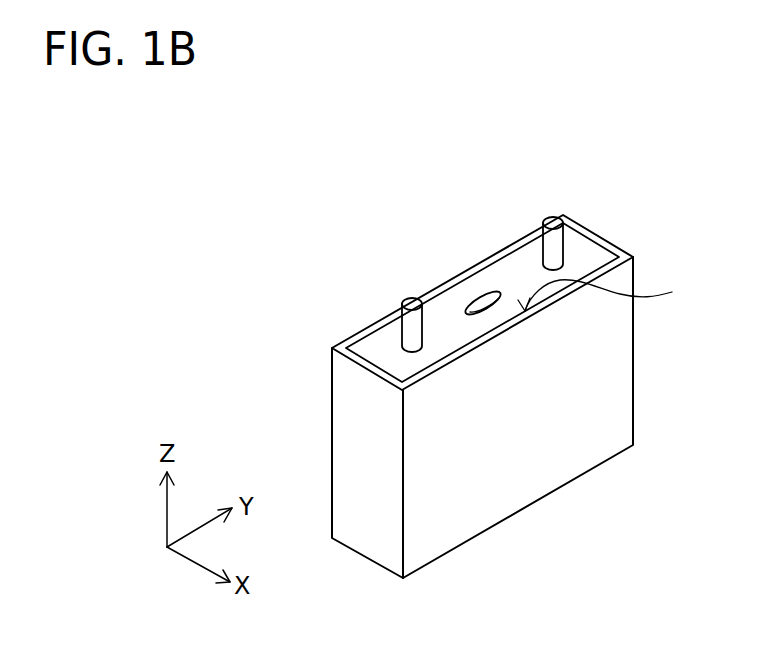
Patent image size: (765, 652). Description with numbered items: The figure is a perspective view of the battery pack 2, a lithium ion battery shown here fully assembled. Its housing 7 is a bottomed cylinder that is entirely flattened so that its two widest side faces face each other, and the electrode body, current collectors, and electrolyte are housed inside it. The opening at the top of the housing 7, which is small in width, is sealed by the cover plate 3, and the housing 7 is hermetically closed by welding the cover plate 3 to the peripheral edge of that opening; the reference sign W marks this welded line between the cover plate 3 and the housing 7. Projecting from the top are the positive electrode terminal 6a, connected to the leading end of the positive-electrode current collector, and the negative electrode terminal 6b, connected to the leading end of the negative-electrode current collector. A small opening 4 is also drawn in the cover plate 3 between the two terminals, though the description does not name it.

The battery pack 2 is at (502, 378).
The cover plate 3 is at (598, 257).
The injection hole 4 is at (478, 298).
The positive electrode terminal 6a is at (548, 222).
The negative electrode terminal 6b is at (407, 299).
The housing 7 is at (623, 380).
The welded line W is at (610, 290).